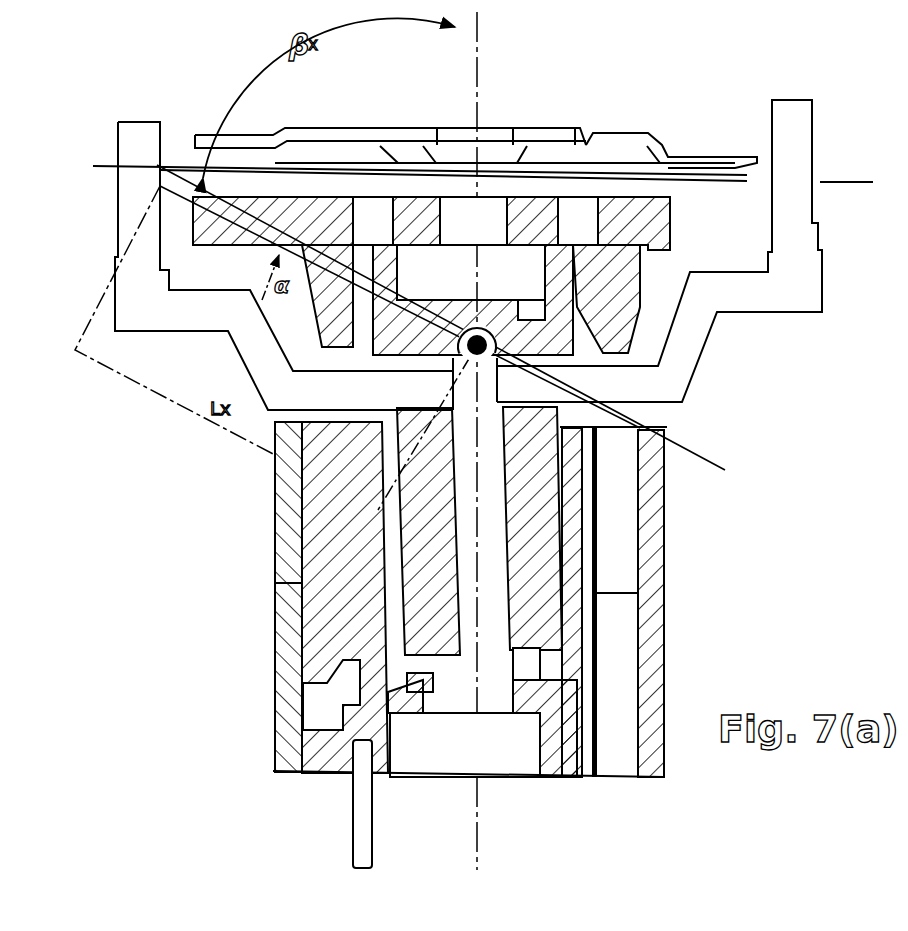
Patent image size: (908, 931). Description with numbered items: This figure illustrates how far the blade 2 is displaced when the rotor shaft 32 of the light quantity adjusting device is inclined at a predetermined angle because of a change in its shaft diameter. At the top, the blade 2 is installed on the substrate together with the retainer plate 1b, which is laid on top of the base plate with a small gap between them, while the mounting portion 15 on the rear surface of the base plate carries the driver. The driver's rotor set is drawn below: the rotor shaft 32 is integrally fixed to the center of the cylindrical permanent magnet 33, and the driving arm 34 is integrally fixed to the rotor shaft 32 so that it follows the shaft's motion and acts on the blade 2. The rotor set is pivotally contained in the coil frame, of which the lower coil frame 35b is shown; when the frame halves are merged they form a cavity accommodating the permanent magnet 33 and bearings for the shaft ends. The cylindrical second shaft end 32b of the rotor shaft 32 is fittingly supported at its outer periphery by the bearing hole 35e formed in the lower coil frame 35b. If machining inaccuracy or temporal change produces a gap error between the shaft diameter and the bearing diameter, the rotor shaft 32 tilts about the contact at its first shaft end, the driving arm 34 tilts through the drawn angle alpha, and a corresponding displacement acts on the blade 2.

The retainer plate 1b is at (598, 138).
The blade 2 is at (667, 148).
The mounting portion 15 is at (630, 312).
The driving arm 34 is at (680, 362).
The rotor shaft 32 is at (482, 518).
The second shaft end 32b is at (470, 702).
The permanent magnet 33 is at (550, 563).
The lower coil frame 35b is at (355, 600).
The bearing hole 35e is at (436, 694).